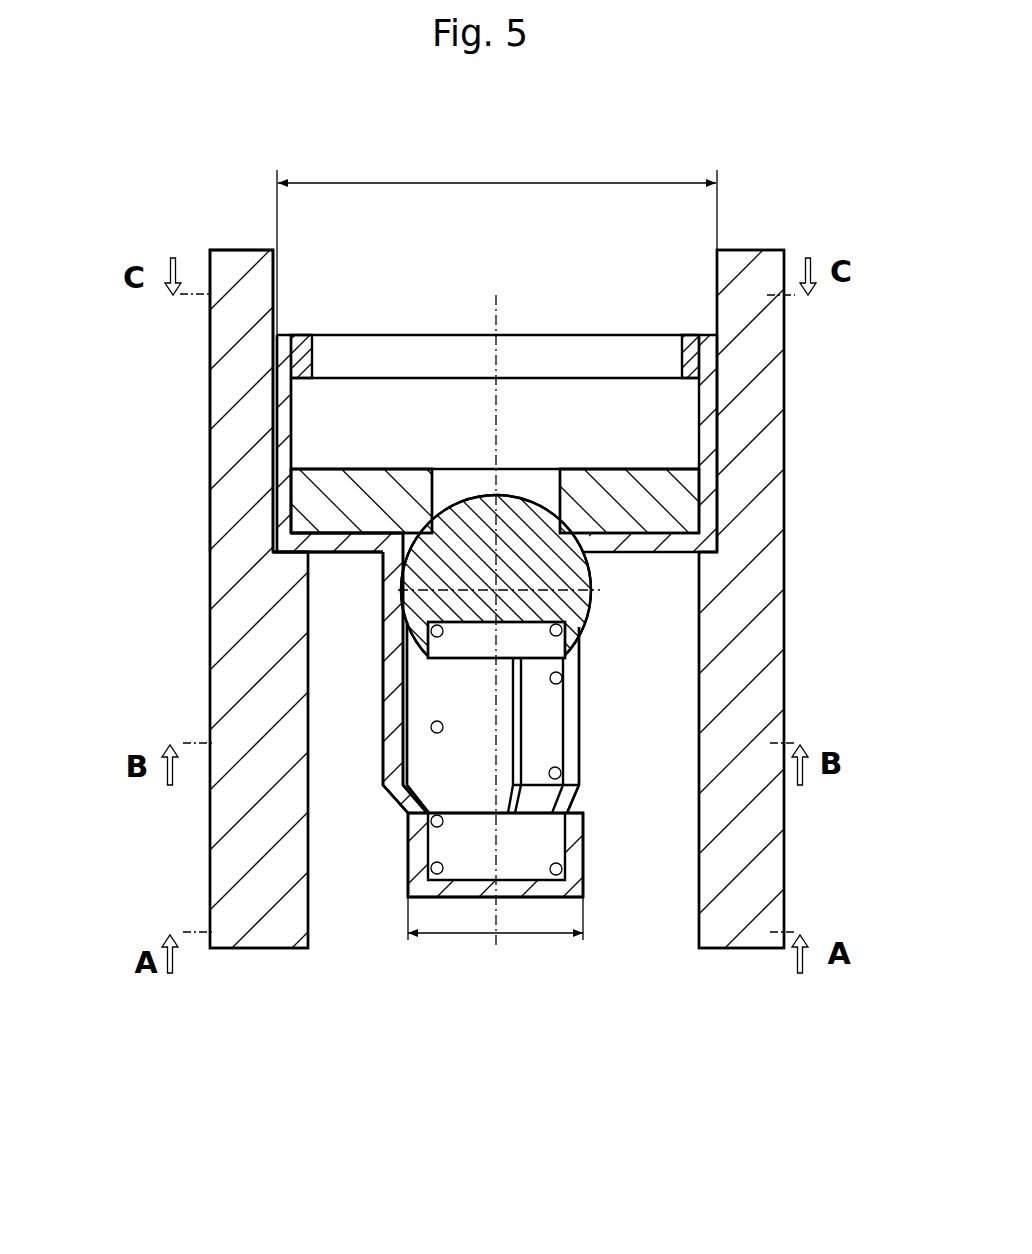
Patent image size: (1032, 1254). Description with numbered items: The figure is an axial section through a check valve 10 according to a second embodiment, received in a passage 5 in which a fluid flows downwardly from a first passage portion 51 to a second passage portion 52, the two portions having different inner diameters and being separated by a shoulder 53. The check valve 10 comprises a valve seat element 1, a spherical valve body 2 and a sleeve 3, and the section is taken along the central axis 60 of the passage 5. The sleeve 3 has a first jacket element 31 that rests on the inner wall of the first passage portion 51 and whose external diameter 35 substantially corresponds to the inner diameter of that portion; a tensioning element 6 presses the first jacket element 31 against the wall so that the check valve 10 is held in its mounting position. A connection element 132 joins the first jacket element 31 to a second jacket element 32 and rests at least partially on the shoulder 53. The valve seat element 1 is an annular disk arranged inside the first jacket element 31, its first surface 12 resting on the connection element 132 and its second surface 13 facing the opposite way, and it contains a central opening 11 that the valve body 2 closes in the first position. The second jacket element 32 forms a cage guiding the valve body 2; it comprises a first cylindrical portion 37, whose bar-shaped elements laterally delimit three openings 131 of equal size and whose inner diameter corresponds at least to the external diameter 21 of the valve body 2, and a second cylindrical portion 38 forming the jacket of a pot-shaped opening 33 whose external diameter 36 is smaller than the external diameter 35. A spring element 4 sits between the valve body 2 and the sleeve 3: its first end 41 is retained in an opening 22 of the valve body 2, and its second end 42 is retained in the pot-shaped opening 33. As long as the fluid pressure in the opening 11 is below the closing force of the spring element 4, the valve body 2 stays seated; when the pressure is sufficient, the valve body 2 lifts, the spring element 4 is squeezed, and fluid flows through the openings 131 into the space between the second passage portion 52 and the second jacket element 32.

The check valve 10 is at (193, 208).
The external diameter 35 is at (320, 182).
The tensioning element 6 is at (302, 342).
The passage 5 is at (718, 324).
The first passage portion 51 is at (225, 348).
The first jacket element 31 is at (280, 407).
The sleeve 3 is at (282, 446).
The opening 11 is at (557, 470).
The second surface 13 is at (359, 469).
The valve seat element 1 is at (353, 499).
The valve body 2 is at (547, 533).
The first surface 12 is at (320, 537).
The shoulder 53 is at (372, 538).
The external diameter 21 is at (583, 568).
The connection element 132 is at (353, 543).
The opening 22 is at (563, 622).
The second jacket element 32 is at (382, 618).
The first end 41 is at (556, 630).
The first cylindrical portion 37 is at (378, 652).
The opening 131 is at (578, 702).
The spring element 4 is at (556, 773).
The pot-shaped opening 33 is at (410, 852).
The second end 42 is at (563, 870).
The second cylindrical portion 38 is at (412, 878).
The external diameter 36 is at (557, 933).
The second passage portion 52 is at (253, 922).
The central axis 60 is at (495, 945).